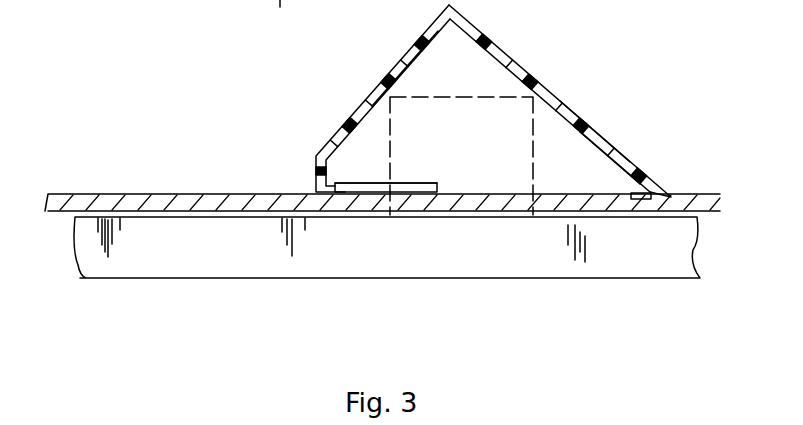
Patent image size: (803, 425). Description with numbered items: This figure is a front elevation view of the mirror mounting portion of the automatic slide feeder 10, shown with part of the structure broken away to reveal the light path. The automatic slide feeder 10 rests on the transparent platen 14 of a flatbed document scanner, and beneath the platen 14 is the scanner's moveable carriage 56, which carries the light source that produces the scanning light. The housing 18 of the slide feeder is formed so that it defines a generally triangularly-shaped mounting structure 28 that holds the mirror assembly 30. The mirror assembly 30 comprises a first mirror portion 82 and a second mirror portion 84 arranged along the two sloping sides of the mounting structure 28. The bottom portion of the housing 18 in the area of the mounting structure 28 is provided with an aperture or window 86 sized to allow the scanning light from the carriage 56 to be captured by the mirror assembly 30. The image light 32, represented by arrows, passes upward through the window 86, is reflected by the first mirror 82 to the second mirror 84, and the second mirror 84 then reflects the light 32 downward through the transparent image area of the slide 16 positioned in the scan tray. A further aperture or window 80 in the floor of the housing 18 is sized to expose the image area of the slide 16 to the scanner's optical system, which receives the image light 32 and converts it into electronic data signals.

The automatic slide feeder 10 is at (243, 110).
The transparent platen 14 is at (112, 193).
The slide 16 is at (425, 183).
The housing 18 is at (414, 38).
The mounting structure 28 is at (490, 38).
The mirror assembly 30 is at (620, 141).
The image light 32 is at (533, 148).
The carriage 56 is at (157, 278).
The aperture or window 80 is at (416, 196).
The first mirror portion 82 is at (610, 160).
The second mirror portion 84 is at (415, 61).
The aperture or window 86 is at (625, 200).